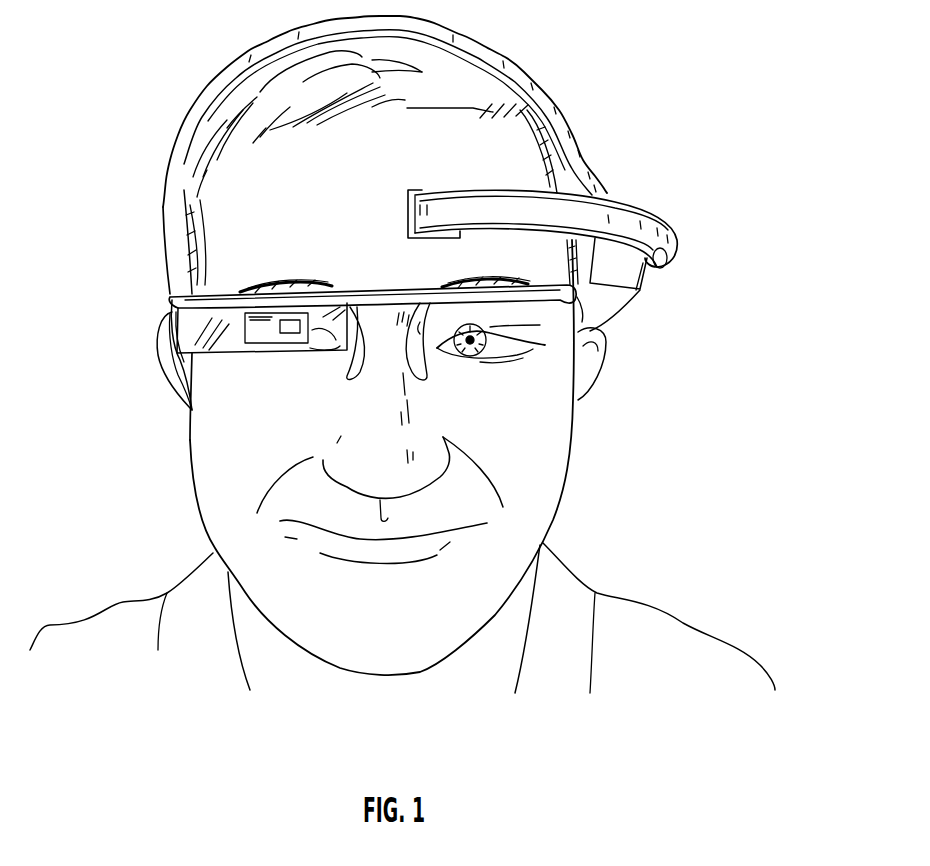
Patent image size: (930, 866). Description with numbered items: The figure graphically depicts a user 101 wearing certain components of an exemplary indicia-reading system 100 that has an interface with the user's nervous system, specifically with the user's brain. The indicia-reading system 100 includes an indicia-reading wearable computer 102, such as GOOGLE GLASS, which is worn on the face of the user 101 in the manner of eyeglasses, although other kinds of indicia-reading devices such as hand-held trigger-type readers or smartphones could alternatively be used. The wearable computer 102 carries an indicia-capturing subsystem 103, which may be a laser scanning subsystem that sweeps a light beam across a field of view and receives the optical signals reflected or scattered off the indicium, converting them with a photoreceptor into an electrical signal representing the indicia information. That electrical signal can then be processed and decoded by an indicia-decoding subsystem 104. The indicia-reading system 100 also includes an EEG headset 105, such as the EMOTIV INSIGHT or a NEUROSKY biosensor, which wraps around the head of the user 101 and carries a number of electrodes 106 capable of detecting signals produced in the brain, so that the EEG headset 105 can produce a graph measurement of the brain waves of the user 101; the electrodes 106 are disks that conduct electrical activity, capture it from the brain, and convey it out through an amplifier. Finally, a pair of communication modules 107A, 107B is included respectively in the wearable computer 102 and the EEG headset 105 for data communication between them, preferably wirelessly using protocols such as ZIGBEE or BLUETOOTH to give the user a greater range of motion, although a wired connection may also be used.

The indicia-reading system 100 is at (628, 105).
The user 101 is at (230, 222).
The indicia-reading wearable computer 102 is at (148, 335).
The indicia-capturing subsystem 103 is at (291, 330).
The indicia-decoding subsystem 104 is at (262, 332).
The EEG headset 105 is at (653, 215).
The electrodes 106 is at (407, 218).
The communication module 107A is at (222, 345).
The communication module 107B is at (645, 290).